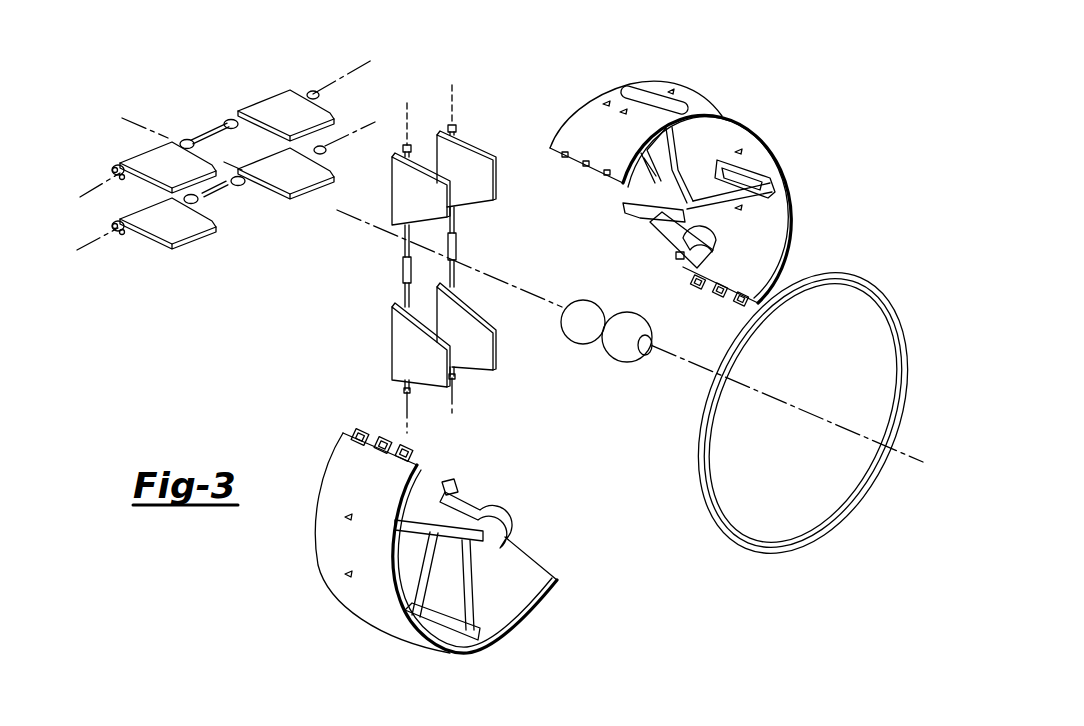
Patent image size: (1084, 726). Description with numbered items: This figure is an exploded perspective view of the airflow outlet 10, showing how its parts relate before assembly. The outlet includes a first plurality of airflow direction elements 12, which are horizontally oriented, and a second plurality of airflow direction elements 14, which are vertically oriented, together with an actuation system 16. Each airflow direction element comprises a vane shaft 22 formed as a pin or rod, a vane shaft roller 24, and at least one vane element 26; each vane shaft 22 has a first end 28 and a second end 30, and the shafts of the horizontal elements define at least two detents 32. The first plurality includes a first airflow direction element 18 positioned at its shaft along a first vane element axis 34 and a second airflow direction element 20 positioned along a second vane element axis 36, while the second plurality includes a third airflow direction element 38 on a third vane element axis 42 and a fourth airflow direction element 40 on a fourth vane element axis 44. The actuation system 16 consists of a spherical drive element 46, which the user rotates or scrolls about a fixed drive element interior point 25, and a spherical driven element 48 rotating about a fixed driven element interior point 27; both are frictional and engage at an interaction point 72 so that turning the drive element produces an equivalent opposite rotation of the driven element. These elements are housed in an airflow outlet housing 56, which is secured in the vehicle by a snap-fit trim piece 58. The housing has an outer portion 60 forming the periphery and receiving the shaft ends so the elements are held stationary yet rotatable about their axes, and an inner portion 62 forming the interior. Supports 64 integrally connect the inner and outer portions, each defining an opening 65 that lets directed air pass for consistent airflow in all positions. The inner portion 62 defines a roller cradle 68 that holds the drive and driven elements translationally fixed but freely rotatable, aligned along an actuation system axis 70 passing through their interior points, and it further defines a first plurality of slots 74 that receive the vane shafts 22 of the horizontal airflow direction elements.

The airflow outlet 10 is at (796, 83).
The first plurality of airflow direction elements 12 is at (88, 210).
The second plurality of airflow direction elements 14 is at (435, 86).
The actuation system 16 is at (578, 285).
The first airflow direction element 18 is at (268, 84).
The second airflow direction element 20 is at (190, 264).
The vane shaft 22 is at (114, 168).
The vane shaft roller 24 is at (208, 133).
The drive element interior point 25 is at (634, 356).
The vane element 26 is at (158, 177).
The driven element interior point 27 is at (598, 302).
The first end 28 is at (124, 181).
The second end 30 is at (311, 92).
The detents 32 is at (178, 137).
The first vane element axis 34 is at (371, 58).
The second vane element axis 36 is at (374, 117).
The third airflow direction element 38 is at (383, 343).
The fourth airflow direction element 40 is at (502, 167).
The third vane element axis 42 is at (410, 431).
The fourth vane element axis 44 is at (455, 411).
The drive element 46 is at (617, 338).
The driven element 48 is at (568, 330).
The airflow outlet housing 56 is at (694, 100).
The trim piece 58 is at (880, 292).
The outer portion 60 is at (794, 185).
The inner portion 62 is at (722, 241).
The supports 64 is at (675, 150).
The opening 65 is at (650, 144).
The roller cradle 68 is at (662, 244).
The actuation system axis 70 is at (919, 469).
The interaction point 72 is at (606, 357).
The first plurality of slots 74 is at (622, 196).